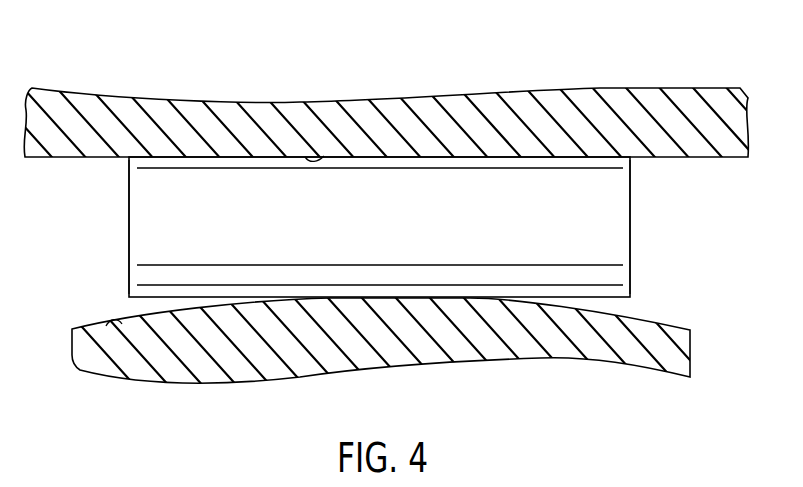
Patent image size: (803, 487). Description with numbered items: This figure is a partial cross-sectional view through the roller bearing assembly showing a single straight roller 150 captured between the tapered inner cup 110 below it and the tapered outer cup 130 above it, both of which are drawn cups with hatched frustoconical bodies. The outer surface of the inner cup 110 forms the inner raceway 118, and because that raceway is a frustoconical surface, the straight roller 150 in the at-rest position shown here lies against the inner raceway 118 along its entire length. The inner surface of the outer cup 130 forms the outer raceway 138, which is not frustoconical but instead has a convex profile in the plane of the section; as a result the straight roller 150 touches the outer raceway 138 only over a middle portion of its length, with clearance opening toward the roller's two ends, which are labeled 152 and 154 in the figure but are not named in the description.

The tapered inner cup 110 is at (517, 69).
The inner raceway 118 is at (305, 157).
The tapered outer cup 130 is at (618, 379).
The outer raceway 138 is at (106, 326).
The straight roller 150 is at (393, 232).
The first end of shim 152 is at (129, 222).
The second end of shim 154 is at (630, 222).